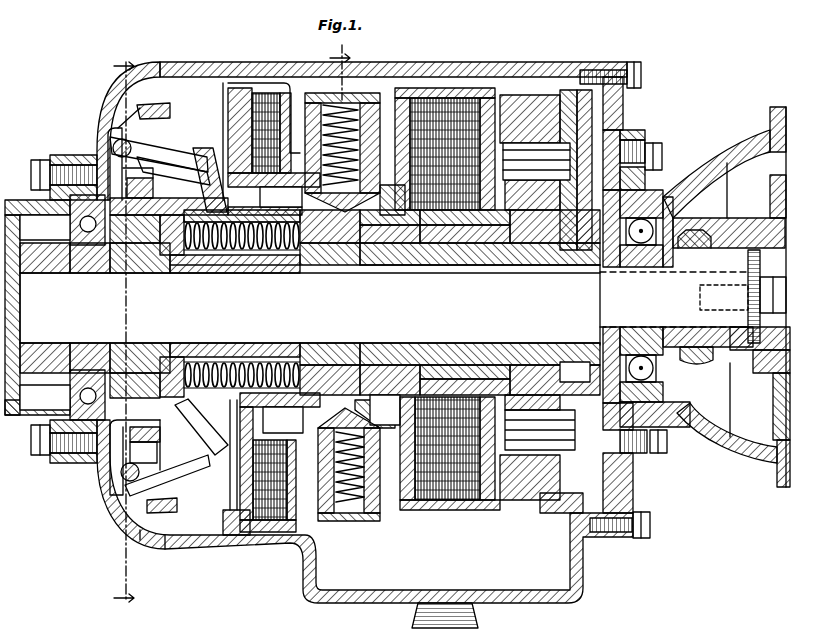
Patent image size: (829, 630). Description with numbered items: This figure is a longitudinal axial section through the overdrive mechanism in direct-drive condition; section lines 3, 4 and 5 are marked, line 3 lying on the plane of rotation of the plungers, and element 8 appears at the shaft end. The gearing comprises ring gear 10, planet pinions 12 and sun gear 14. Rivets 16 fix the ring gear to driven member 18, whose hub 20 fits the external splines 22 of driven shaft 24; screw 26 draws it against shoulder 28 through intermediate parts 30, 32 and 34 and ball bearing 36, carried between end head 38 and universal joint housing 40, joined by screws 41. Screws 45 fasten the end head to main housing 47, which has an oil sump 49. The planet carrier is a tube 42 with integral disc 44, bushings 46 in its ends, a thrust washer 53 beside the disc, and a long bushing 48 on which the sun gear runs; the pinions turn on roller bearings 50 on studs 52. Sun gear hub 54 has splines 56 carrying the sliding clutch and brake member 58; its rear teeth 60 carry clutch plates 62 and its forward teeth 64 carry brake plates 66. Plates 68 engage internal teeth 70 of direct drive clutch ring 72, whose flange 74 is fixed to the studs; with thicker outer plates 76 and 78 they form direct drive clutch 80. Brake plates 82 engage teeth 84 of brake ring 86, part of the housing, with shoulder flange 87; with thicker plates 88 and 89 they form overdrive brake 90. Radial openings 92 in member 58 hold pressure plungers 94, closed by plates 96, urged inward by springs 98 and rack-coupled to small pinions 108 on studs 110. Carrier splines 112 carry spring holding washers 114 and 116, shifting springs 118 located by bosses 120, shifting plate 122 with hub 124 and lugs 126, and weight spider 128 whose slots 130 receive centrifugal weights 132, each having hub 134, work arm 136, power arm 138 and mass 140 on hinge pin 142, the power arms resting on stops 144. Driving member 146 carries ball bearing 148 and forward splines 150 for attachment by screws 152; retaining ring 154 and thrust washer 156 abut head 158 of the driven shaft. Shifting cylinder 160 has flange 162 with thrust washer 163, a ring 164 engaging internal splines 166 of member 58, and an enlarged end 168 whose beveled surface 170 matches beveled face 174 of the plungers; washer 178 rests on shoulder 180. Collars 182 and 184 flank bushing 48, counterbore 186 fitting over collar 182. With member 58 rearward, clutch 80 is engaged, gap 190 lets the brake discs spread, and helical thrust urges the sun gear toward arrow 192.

The line 3— 3 is at (341, 68).
The section line 4 is at (124, 332).
The lower clutch pack and drain plug 5 is at (450, 513).
The shaft end nut 8 is at (767, 296).
The ring gear 10 is at (590, 62).
The planet pinions 12 is at (510, 118).
The sun gear 14 is at (575, 375).
The rivets 16 is at (622, 130).
The driven member 18 is at (640, 140).
The hub 20 is at (645, 250).
The external splines 22 is at (700, 250).
The driven shaft 24 is at (761, 297).
The screw 26 is at (700, 305).
The shoulder 28 is at (625, 338).
The intermediate part 30 is at (650, 340).
The intermediate part 32 is at (740, 382).
The intermediate part 34 is at (763, 406).
The ball bearing 36 is at (700, 180).
The end head 38 is at (633, 488).
The universal joint housing 40 is at (755, 452).
The screws 41 is at (665, 455).
The carrier tube 42 is at (452, 310).
The carrier disc 44 is at (665, 175).
The screws 45 is at (641, 75).
The bearing bushings 46 is at (125, 343).
The main housing 47 is at (180, 549).
The long bearing bushing 48 is at (385, 365).
The sump 49 is at (584, 578).
The roller bearings 50 is at (530, 265).
The studs 52 is at (536, 161).
The thrust washer 53 is at (630, 262).
The hub 54 is at (470, 382).
The external splines 56 is at (435, 228).
The clutch and brake member 58 is at (440, 368).
The external teeth 60 is at (525, 268).
The clutch plates 62 is at (450, 245).
The external teeth 64 is at (195, 163).
The brake plates 66 is at (220, 455).
The clutch plates 68 is at (445, 86).
The internal teeth 70 is at (425, 98).
The direct drive clutch ring 72 is at (470, 98).
The flange 74 is at (568, 92).
The outer plate 76 is at (386, 200).
The outer plate 78 is at (585, 90).
The direct drive clutch 80 is at (362, 130).
The brake plates 82 is at (250, 532).
The internal teeth 84 is at (270, 532).
The overdrive brake ring 86 is at (245, 540).
The flange 87 is at (230, 515).
The outer plate 88 is at (252, 120).
The outer plate 89 is at (286, 93).
The overdrive brake 90 is at (232, 135).
The radial openings 92 is at (370, 515).
The clutch and brake pressure plungers 94 is at (330, 515).
The plates 96 is at (350, 512).
The clutch and brake pressure springs 98 is at (340, 522).
The small pinions 108 is at (372, 93).
The studs 110 is at (390, 75).
The external splines 112 is at (318, 275).
The spring holding washer 114 is at (200, 266).
The spring holding washer 116 is at (252, 275).
The brake-to-clutch shifting springs 118 is at (255, 266).
The bosses 120 is at (245, 252).
The clutch and brake shifting plate 122 is at (169, 201).
The hub 124 is at (170, 262).
The lugs 126 is at (150, 183).
The weight carrying spider 128 is at (125, 275).
The slot 130 is at (145, 343).
The centrifugal weight 132 is at (190, 100).
The hub 134 is at (108, 140).
The work arm 136 is at (154, 466).
The power arm 138 is at (153, 146).
The weight mass 140 is at (212, 462).
The hinge pin 142 is at (125, 478).
The stops 144 is at (160, 103).
The driving member 146 is at (65, 256).
The ball bearing 148 is at (75, 396).
The external splines 150 is at (58, 236).
The screws 152 is at (42, 456).
The retaining ring 154 is at (98, 345).
The thrust washer 156 is at (15, 275).
The head 158 is at (15, 310).
The clutch and brake shifting cylinder 160 is at (148, 457).
The flange 162 is at (206, 345).
The thrust washer 163 is at (190, 330).
The circular ring 164 is at (281, 197).
The internal splines 166 is at (275, 141).
The enlarged end 168 is at (272, 360).
The beveled surface 170 is at (283, 420).
The beveled face 174 is at (377, 411).
The washer 178 is at (325, 365).
The shoulder 180 is at (365, 228).
The collar 182 is at (585, 268).
The second collar 184 is at (380, 245).
The counterbore 186 is at (555, 245).
The gap 190 is at (245, 88).
The arrow 192 is at (470, 266).